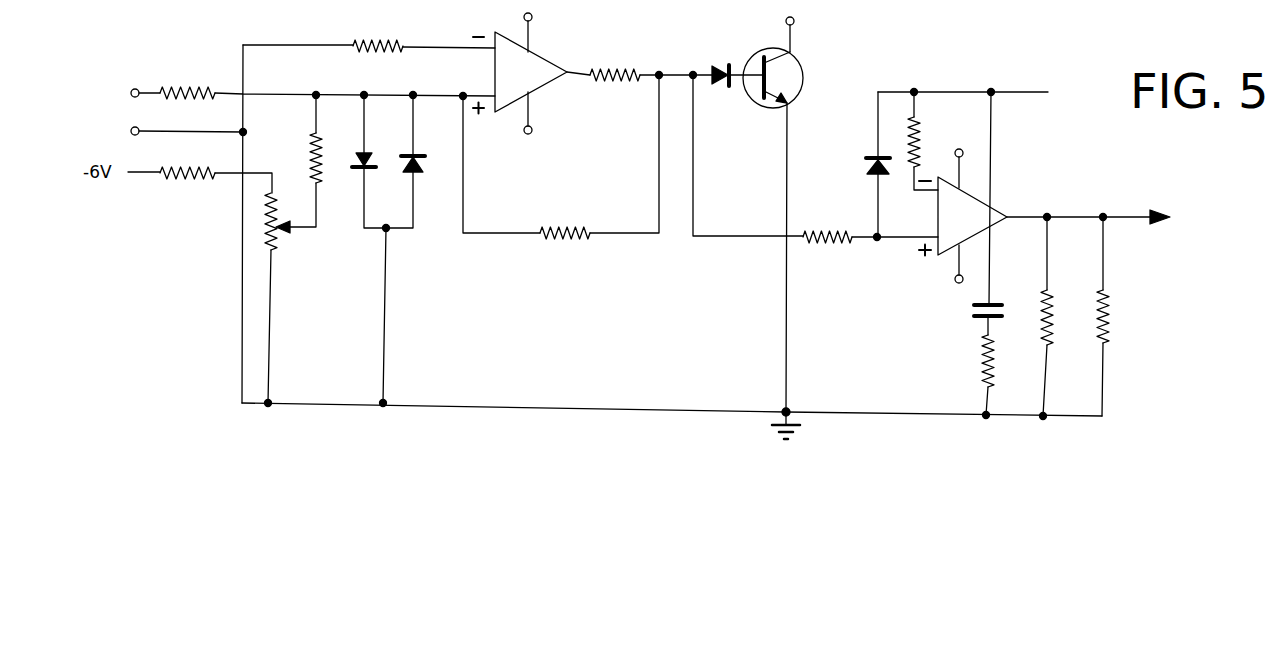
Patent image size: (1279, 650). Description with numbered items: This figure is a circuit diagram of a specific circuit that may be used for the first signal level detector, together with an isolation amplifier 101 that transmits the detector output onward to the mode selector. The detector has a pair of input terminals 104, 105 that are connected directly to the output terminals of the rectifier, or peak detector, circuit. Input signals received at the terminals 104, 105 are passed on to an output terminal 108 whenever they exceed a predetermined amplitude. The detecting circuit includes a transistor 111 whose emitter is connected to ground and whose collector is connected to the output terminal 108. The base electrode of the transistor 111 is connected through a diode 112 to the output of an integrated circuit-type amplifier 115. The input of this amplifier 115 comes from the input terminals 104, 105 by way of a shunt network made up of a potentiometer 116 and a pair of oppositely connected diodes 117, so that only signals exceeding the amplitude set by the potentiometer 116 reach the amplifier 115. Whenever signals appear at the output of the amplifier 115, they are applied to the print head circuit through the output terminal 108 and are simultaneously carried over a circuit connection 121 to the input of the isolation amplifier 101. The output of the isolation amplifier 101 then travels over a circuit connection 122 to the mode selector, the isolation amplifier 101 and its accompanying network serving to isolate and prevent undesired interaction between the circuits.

The input terminal 104 is at (135, 89).
The input terminal 105 is at (130, 131).
The output terminal 108 is at (796, 19).
The transistor 111 is at (770, 106).
The diode 112 is at (725, 65).
The integrated circuit-type amplifier 115 is at (497, 73).
The potentiometer 116 is at (275, 252).
The pair of oppositely connected diodes 117 is at (410, 159).
The circuit connection 121 is at (728, 237).
The isolation amplifier 101 is at (940, 215).
The circuit connection 122 is at (1140, 222).